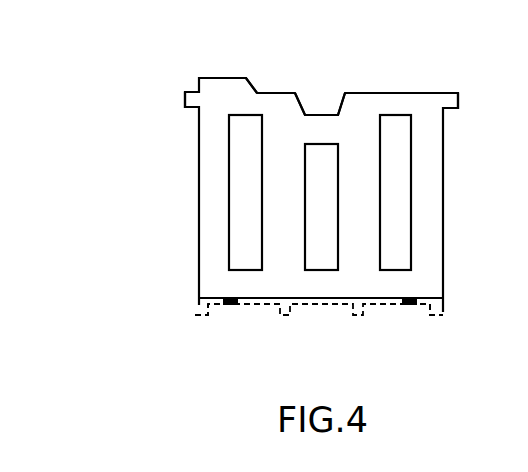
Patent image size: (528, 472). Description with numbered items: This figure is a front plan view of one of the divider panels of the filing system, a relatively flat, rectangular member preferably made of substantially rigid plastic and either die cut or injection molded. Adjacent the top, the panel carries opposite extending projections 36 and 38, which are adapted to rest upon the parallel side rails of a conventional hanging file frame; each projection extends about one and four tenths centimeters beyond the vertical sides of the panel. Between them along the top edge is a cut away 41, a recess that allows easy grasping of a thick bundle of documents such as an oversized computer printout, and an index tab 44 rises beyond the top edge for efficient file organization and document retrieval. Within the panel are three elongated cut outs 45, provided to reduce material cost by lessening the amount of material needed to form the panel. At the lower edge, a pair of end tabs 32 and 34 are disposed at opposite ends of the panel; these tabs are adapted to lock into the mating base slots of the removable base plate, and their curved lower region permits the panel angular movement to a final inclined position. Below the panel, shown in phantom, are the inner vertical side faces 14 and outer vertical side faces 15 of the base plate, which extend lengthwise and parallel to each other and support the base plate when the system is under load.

The inner vertical side faces 14 is at (290, 315).
The outer vertical side faces 15 is at (195, 315).
The end tab 32 is at (232, 308).
The end tab 34 is at (408, 308).
The projection 36 is at (185, 92).
The projection 38 is at (458, 93).
The cut away 41 is at (306, 110).
The index tab 44 is at (228, 78).
The cut outs 45 is at (230, 228).